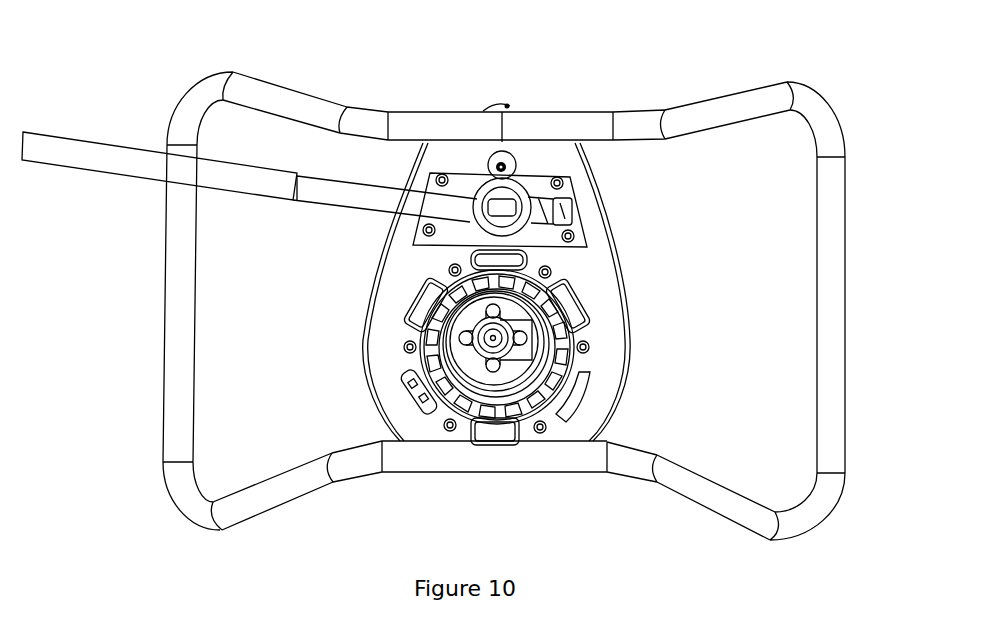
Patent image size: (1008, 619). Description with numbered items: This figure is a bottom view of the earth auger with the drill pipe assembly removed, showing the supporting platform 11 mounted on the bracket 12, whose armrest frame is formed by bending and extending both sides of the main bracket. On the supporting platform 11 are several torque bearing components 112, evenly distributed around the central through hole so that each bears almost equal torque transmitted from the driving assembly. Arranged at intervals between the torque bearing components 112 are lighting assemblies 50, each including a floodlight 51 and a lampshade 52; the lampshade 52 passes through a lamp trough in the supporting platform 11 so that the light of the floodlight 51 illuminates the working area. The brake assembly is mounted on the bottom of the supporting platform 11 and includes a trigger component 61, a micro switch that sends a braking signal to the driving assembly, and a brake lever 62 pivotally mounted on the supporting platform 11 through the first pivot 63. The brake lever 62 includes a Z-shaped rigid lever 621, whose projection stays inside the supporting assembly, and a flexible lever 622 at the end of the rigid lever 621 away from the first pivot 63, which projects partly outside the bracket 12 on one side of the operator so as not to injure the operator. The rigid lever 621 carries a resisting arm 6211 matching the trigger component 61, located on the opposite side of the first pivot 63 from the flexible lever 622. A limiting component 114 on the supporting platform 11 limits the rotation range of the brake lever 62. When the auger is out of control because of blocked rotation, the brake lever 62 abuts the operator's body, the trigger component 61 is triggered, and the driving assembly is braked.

The supporting platform 11 is at (607, 362).
The bracket 12 is at (825, 343).
The lighting assembly 50 is at (590, 243).
The floodlight 51 is at (402, 380).
The lampshade 52 is at (606, 400).
The trigger component 61 is at (573, 203).
The brake lever 62 is at (361, 119).
The rigid lever 621 is at (370, 190).
The resisting arm 6211 is at (548, 212).
The flexible lever 622 is at (118, 163).
The first pivot 63 is at (505, 175).
The torque bearing component 112 is at (417, 300).
The limiting component 114 is at (443, 178).